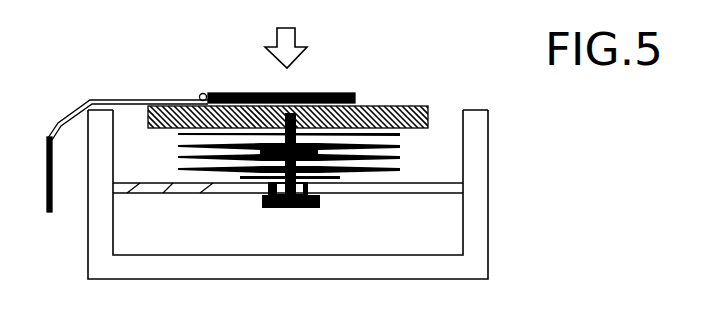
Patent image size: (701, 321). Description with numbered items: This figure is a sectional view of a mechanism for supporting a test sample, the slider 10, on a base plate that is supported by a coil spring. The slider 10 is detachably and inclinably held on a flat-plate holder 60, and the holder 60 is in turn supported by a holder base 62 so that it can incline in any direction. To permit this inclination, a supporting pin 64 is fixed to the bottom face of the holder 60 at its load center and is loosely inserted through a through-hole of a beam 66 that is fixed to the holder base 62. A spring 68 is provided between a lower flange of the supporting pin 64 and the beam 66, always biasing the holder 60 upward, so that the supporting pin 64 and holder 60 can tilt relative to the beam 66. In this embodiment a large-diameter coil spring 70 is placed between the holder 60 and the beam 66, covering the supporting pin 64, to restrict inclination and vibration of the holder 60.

The slider 10 is at (240, 92).
The holder 60 is at (374, 110).
The holder base 62 is at (98, 223).
The supporting pin 64 is at (290, 208).
The beam 66 is at (447, 190).
The spring 68 is at (318, 180).
The coil spring 70 is at (398, 147).